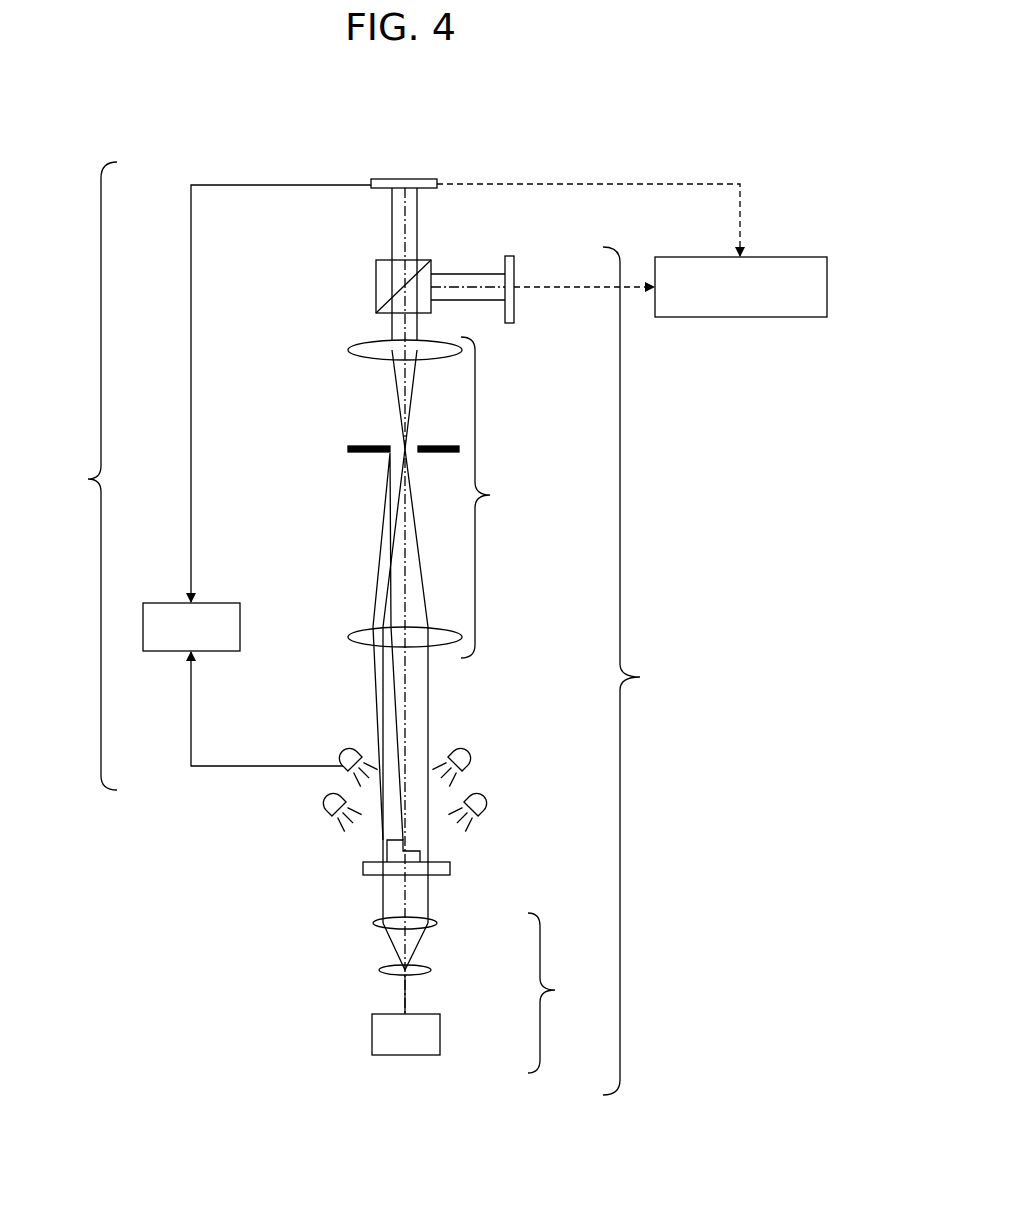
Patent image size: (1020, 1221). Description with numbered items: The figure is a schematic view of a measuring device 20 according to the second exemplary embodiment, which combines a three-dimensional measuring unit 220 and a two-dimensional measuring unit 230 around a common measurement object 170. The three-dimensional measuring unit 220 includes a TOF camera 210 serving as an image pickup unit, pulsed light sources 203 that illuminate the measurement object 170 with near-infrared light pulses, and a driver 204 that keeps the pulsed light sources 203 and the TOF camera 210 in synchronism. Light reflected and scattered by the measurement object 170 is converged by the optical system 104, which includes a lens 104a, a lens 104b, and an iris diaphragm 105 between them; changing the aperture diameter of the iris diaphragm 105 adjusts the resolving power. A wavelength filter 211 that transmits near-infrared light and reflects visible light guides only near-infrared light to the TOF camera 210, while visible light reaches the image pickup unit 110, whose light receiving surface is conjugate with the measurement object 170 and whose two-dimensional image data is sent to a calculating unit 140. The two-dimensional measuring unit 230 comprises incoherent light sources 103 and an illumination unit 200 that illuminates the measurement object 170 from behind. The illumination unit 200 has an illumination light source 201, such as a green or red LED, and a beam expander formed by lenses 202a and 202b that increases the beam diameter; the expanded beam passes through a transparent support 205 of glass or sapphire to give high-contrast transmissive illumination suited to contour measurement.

The measuring device 20 is at (453, 90).
The TOF camera 210 is at (405, 179).
The wavelength filter 211 is at (376, 284).
The image pickup unit 110 is at (514, 310).
The calculating unit 140 is at (744, 317).
The lens 104b is at (358, 358).
The iris diaphragm 105 is at (352, 453).
The optical system 104 is at (499, 497).
The lens 104a is at (362, 628).
The driver 204 is at (240, 628).
The three-dimensional measuring unit 220 is at (78, 476).
The two-dimensional measuring unit 230 is at (645, 671).
The pulsed light source 203 is at (344, 757).
The incoherent light source 103 is at (330, 803).
The measurement object 170 is at (393, 848).
The support 205 is at (450, 868).
The lens 202b is at (437, 923).
The lens 202a is at (431, 970).
The illumination light source 201 is at (430, 1035).
The illumination unit 200 is at (566, 993).